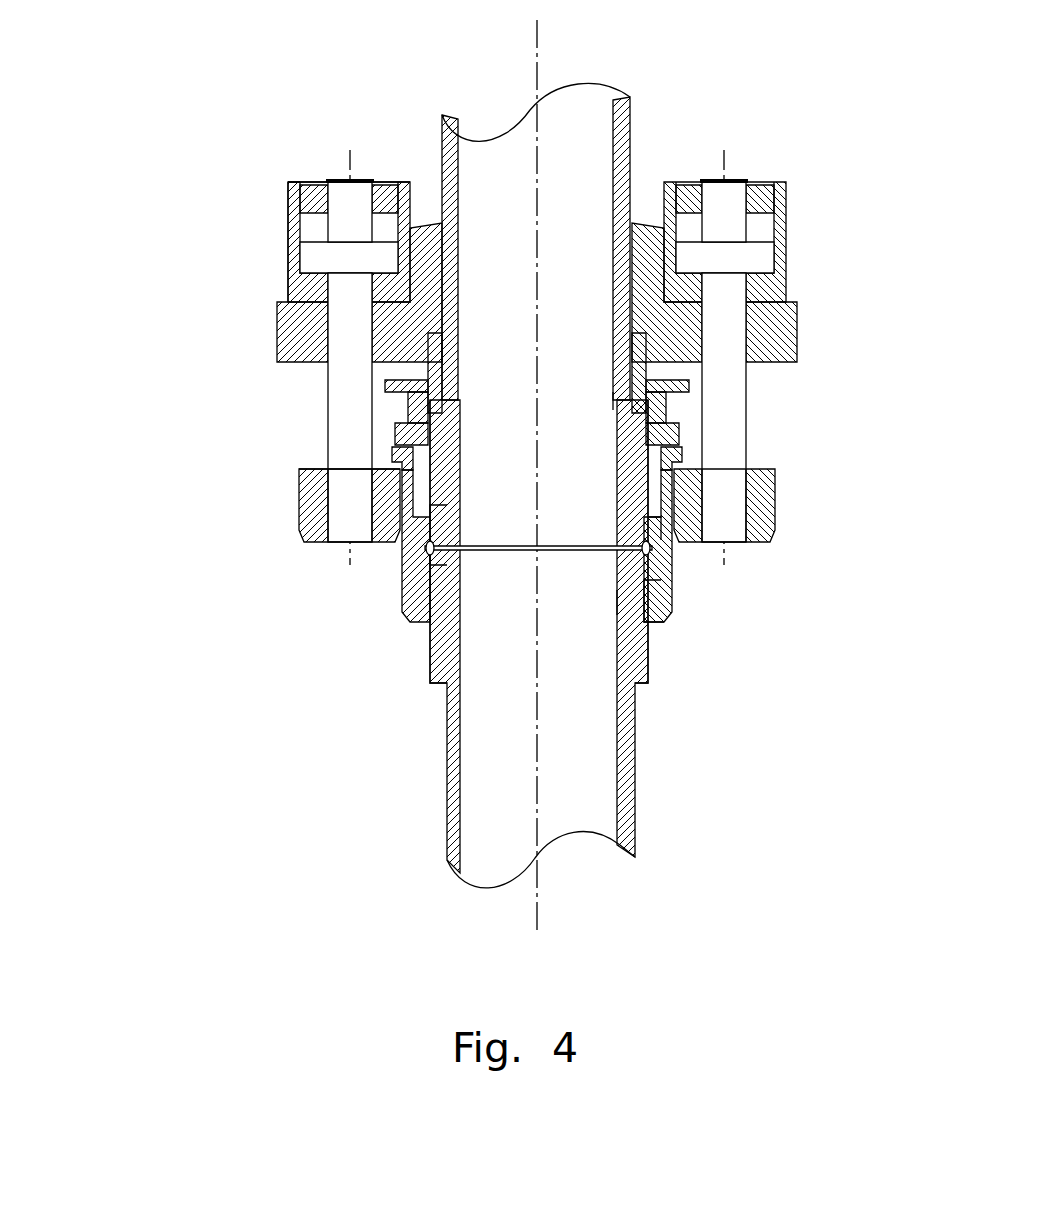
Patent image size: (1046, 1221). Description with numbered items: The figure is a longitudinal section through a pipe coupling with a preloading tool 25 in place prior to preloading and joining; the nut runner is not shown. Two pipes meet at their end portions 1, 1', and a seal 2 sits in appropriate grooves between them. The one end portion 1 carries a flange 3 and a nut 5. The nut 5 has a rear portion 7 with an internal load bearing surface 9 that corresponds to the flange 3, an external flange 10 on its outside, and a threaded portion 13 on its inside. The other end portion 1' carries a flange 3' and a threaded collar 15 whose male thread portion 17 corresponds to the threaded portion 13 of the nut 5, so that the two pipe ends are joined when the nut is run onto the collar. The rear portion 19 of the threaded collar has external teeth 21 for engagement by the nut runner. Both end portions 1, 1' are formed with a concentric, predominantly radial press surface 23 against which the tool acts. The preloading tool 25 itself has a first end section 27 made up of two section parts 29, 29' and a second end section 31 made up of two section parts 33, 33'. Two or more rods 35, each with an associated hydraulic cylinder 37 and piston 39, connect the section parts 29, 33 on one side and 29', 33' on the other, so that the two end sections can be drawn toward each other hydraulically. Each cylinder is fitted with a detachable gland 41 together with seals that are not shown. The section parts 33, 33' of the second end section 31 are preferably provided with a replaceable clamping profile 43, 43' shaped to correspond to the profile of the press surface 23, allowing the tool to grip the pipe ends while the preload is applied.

The end portion of pipe 1 is at (539, 687).
The end portion of pipe 1' is at (536, 203).
The seal 2 is at (643, 557).
The flange 3 is at (469, 574).
The flange 3' is at (480, 518).
The nut 5 is at (677, 567).
The rear portion of nut 7 is at (677, 602).
The internal load bearing surface 9 is at (617, 602).
The external flange 10 is at (680, 443).
The threaded portion 13 is at (670, 490).
The threaded collar 15 is at (663, 408).
The male thread portion 17 is at (663, 427).
The rear portion of threaded collar 19 is at (613, 397).
The external teeth 21 is at (690, 380).
The press surface 23 is at (458, 405).
The preloading tool 25 is at (257, 368).
The first end section 27 is at (258, 517).
The section part 29 is at (301, 592).
The section part 29' is at (803, 517).
The second end section 31 is at (202, 233).
The section part 33 is at (247, 252).
The section part 33' is at (803, 250).
The rod 35 is at (330, 386).
The hydraulic cylinder 37 is at (288, 207).
The piston 39 is at (320, 260).
The detachable gland 41 is at (388, 184).
The clamping profile 43 is at (478, 356).
The clamping profile 43' is at (599, 356).